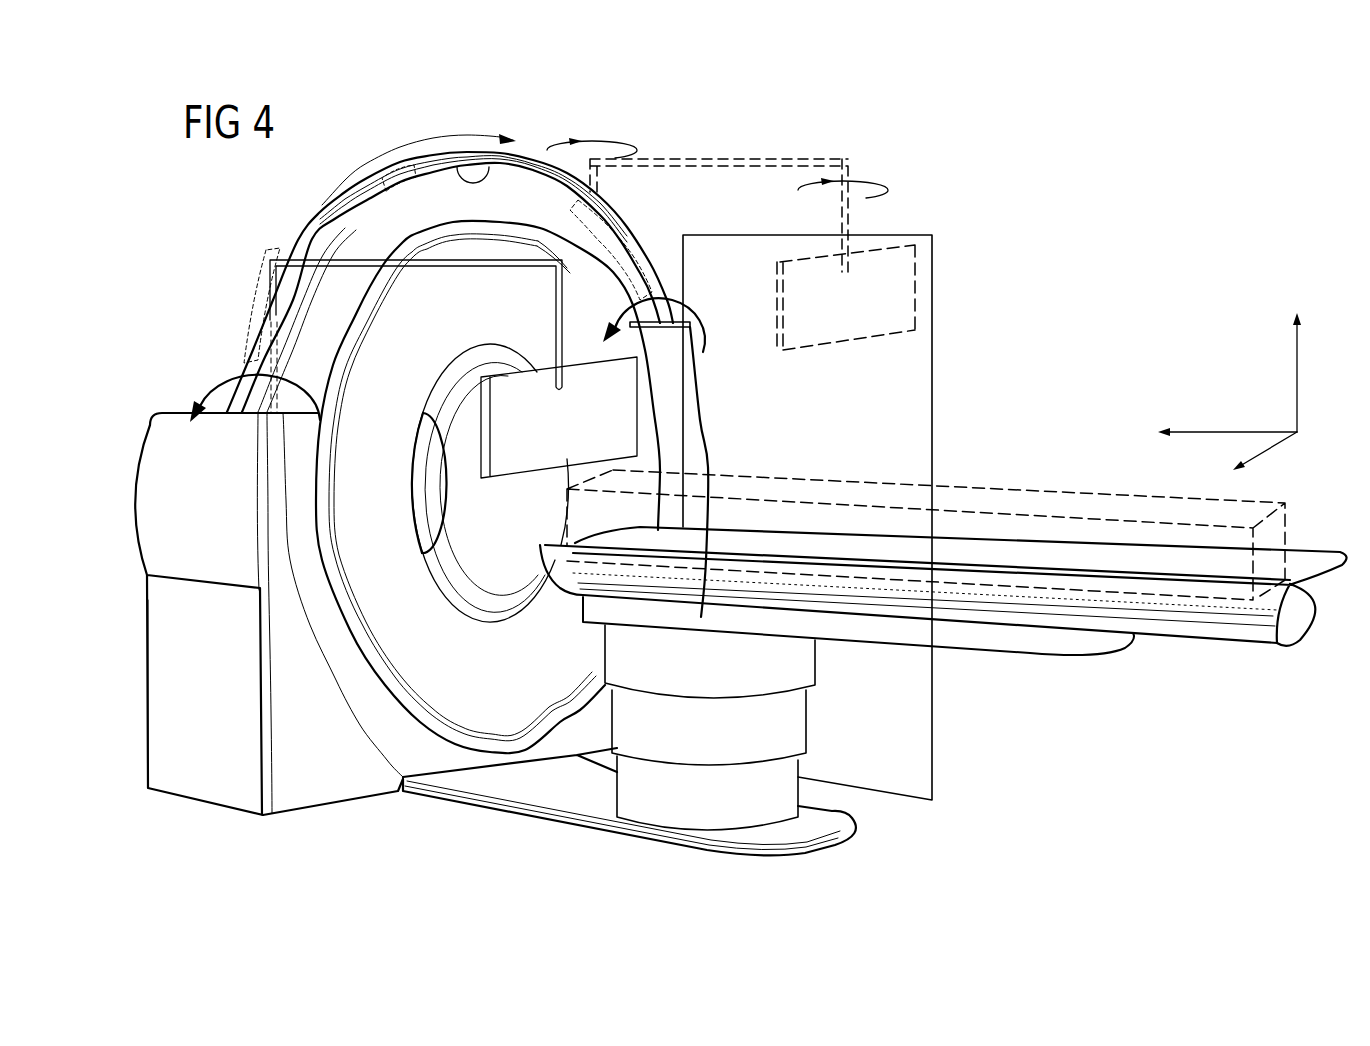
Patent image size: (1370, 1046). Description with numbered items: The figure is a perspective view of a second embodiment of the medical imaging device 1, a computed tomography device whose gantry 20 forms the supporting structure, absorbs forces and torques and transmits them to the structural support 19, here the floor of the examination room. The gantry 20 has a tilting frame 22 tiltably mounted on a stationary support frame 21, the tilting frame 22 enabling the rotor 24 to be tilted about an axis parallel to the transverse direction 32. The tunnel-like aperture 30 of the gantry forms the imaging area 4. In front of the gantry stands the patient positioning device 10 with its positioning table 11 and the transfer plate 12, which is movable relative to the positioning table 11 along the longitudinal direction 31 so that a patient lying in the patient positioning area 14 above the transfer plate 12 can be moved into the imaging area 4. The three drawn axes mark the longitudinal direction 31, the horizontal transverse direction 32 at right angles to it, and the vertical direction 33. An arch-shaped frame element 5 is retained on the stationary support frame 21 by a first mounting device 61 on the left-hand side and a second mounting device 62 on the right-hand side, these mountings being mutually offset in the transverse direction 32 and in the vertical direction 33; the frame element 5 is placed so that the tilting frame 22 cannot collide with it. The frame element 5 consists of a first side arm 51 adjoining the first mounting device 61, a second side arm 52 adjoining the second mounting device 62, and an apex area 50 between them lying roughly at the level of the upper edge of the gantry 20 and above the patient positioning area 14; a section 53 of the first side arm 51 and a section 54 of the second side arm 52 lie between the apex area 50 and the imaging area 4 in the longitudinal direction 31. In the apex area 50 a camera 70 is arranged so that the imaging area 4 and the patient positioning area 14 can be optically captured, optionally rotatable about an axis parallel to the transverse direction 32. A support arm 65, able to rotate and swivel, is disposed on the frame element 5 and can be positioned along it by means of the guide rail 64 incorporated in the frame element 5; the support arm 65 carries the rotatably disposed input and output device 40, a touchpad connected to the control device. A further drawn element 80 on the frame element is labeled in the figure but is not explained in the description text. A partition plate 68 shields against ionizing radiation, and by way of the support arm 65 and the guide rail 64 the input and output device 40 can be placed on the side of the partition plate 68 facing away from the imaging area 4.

The medical imaging device 1 is at (1043, 250).
The imaging area 4 is at (488, 487).
The frame element 5 is at (300, 228).
The patient positioning device 10 is at (940, 664).
The positioning table 11 is at (790, 728).
The transfer plate 12 is at (1124, 563).
The patient positioning area 14 is at (1033, 494).
The structural support 19 is at (629, 820).
The gantry 20 is at (126, 418).
The stationary support frame 21 is at (180, 705).
The tilting frame 22 is at (361, 639).
The rotor 24 is at (438, 684).
The tunnel-like aperture 30 is at (470, 571).
The longitudinal direction 31 is at (1213, 430).
The transverse direction 32 is at (1263, 458).
The vertical direction 33 is at (1297, 352).
The input and output device 40 is at (516, 448).
The apex area 50 is at (512, 160).
The first side arm 51 is at (668, 250).
The second side arm 52 is at (193, 305).
The section of the first side arm 53 is at (636, 296).
The section of the second side arm 54 is at (250, 347).
The first mounting device 61 is at (650, 328).
The second mounting device 62 is at (218, 388).
The guide rail 64 is at (368, 190).
The support arm 65 is at (450, 266).
The partition plate 68 is at (903, 412).
The camera 70 is at (470, 170).
The bearing 80 is at (405, 178).